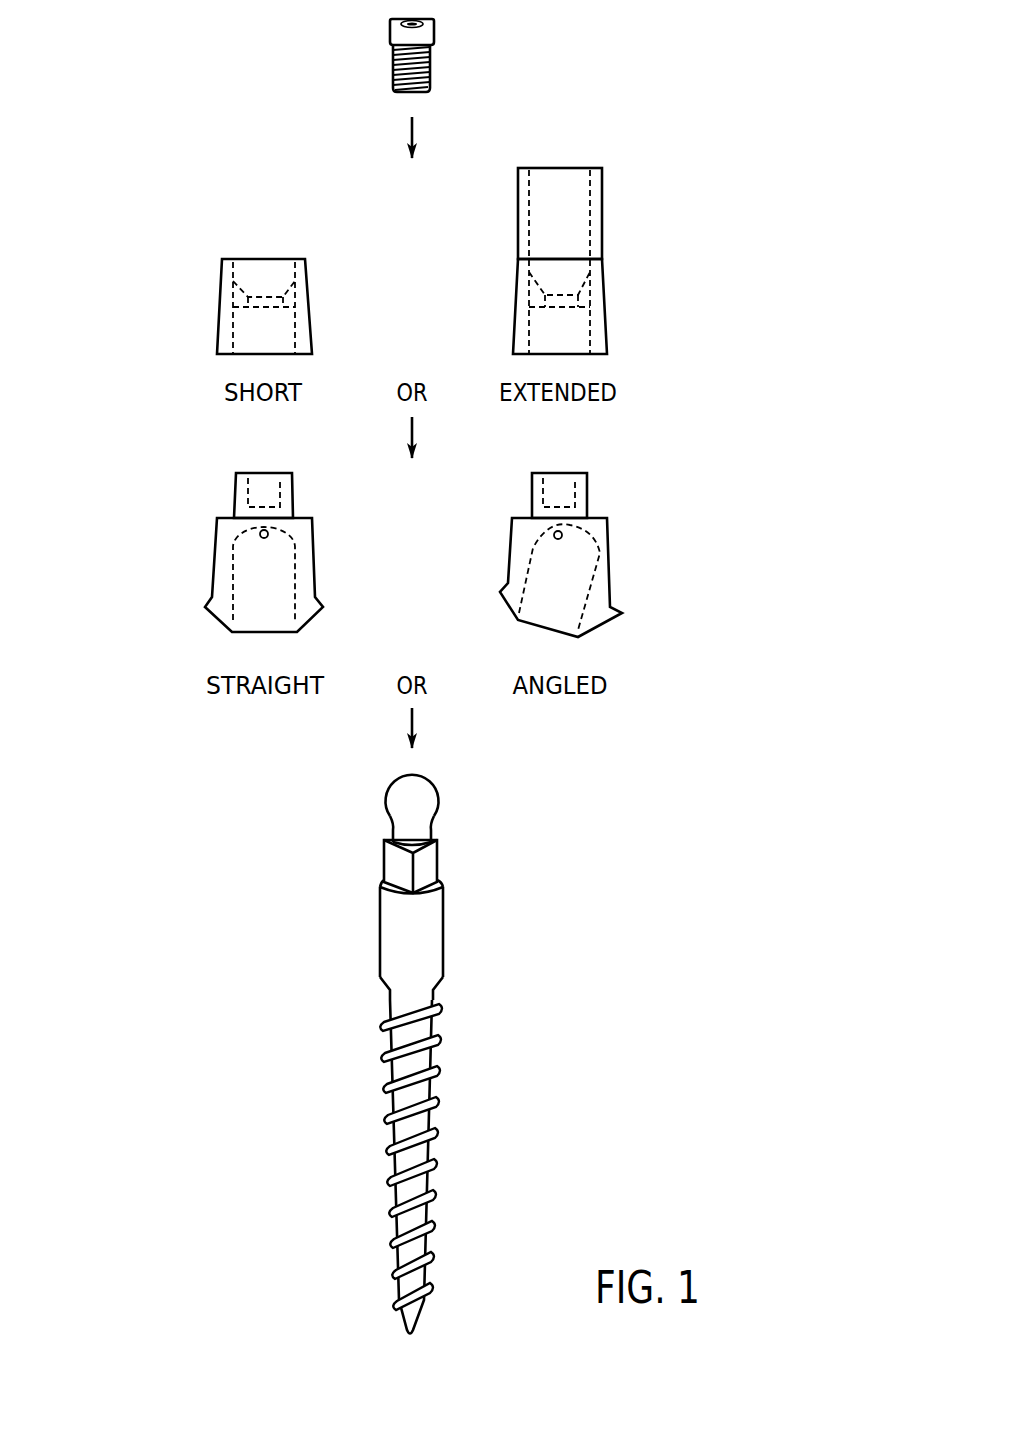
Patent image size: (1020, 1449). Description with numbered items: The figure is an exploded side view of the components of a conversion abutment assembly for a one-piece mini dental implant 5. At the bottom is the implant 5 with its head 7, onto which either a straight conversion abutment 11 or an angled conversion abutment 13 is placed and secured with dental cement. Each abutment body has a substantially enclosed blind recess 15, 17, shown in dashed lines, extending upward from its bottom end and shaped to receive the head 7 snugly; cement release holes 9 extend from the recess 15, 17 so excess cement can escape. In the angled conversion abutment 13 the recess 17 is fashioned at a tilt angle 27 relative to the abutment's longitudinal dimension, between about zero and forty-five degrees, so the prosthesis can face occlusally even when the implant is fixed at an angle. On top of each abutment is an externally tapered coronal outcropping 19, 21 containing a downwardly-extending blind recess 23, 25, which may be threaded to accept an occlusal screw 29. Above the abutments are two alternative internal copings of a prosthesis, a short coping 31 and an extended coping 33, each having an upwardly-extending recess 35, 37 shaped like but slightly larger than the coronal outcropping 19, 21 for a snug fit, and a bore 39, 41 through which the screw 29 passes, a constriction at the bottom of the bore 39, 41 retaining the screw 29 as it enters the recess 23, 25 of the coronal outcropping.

The mini dental implant 5 is at (398, 1054).
The head 7 is at (444, 799).
The cement release holes 9 is at (268, 534).
The conversion abutment 11 is at (232, 539).
The angled conversion abutment 13 is at (592, 556).
The blind recess 15 is at (250, 575).
The blind recess 17 is at (575, 567).
The coronal outcropping 19 is at (224, 470).
The coronal outcropping 21 is at (603, 470).
The blind recess 23 is at (267, 488).
The blind recess 25 is at (565, 488).
The tilt angle 27 is at (548, 632).
The occlusal screw 29 is at (375, 55).
The short coping 31 is at (219, 286).
The extended coping 33 is at (606, 240).
The recess 35 is at (253, 323).
The recess 37 is at (578, 327).
The bore 39 is at (258, 273).
The bore 41 is at (562, 188).